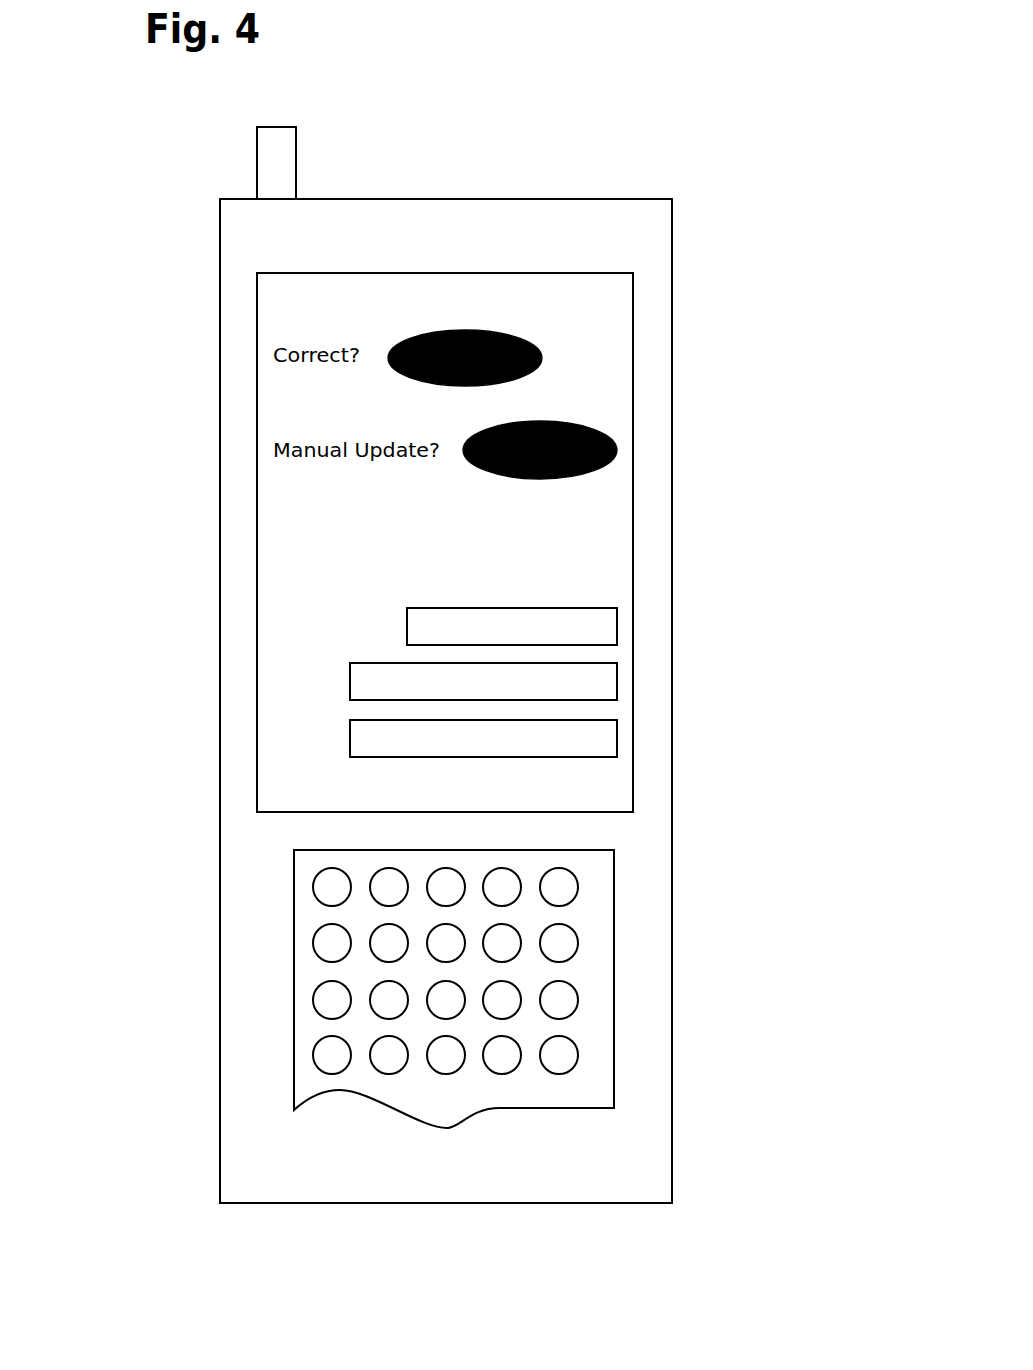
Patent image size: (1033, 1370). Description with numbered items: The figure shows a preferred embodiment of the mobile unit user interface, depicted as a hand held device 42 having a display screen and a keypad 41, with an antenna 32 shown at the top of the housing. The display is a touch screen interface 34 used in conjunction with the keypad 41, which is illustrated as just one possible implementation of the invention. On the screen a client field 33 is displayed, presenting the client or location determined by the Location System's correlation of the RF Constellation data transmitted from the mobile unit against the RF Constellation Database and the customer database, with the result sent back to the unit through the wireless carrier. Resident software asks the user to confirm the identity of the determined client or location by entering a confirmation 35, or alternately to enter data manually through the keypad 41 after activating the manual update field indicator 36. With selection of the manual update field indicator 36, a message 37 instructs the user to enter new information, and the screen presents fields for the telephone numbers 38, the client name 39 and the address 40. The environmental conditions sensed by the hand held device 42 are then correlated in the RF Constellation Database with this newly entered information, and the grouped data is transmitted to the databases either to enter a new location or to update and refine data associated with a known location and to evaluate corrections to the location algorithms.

The antenna 32 is at (349, 144).
The client field 33 is at (487, 212).
The touch screen interface 34 is at (340, 542).
The confirmation 35 is at (625, 316).
The manual update field indicator 36 is at (657, 415).
The message 37 is at (556, 533).
The telephone numbers 38 is at (548, 598).
The client name 39 is at (553, 656).
The address 40 is at (556, 720).
The keypad 41 is at (579, 980).
The hand held device 42 is at (378, 701).